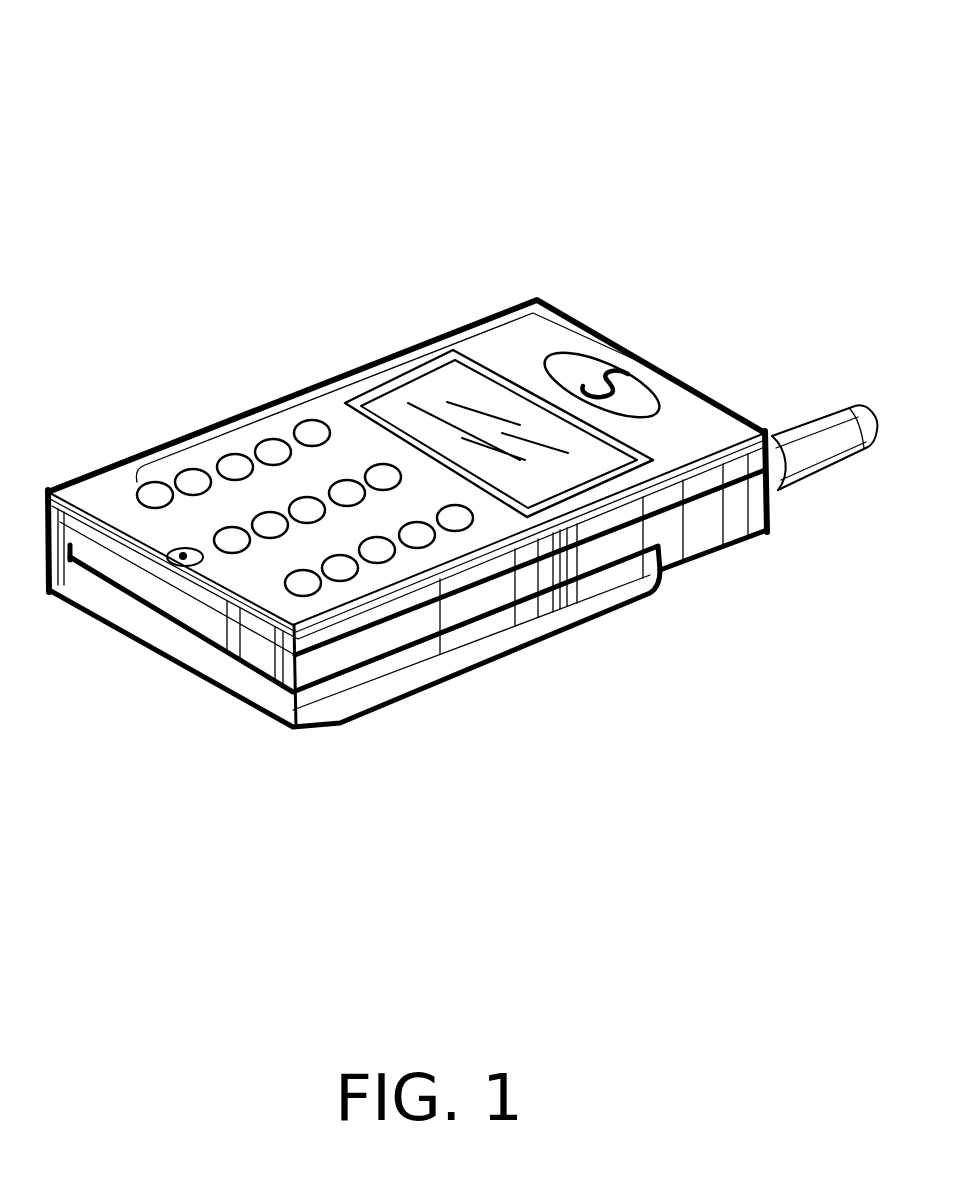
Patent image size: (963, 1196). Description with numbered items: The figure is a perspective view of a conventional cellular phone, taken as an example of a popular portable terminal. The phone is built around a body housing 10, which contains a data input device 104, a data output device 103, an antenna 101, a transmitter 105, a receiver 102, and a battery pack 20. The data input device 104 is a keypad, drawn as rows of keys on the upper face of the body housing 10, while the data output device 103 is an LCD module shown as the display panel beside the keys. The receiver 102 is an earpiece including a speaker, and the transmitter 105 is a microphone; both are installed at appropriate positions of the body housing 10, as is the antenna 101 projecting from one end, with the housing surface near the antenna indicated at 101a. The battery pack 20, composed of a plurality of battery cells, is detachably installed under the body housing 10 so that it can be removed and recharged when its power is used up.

The body housing 10 is at (300, 342).
The antenna 101 is at (808, 442).
The housing (upper case) 101a is at (683, 427).
The receiver 102 is at (600, 378).
The data output device 103 is at (463, 387).
The data input device 104 is at (220, 445).
The transmitter 105 is at (170, 548).
The battery pack 20 is at (478, 672).